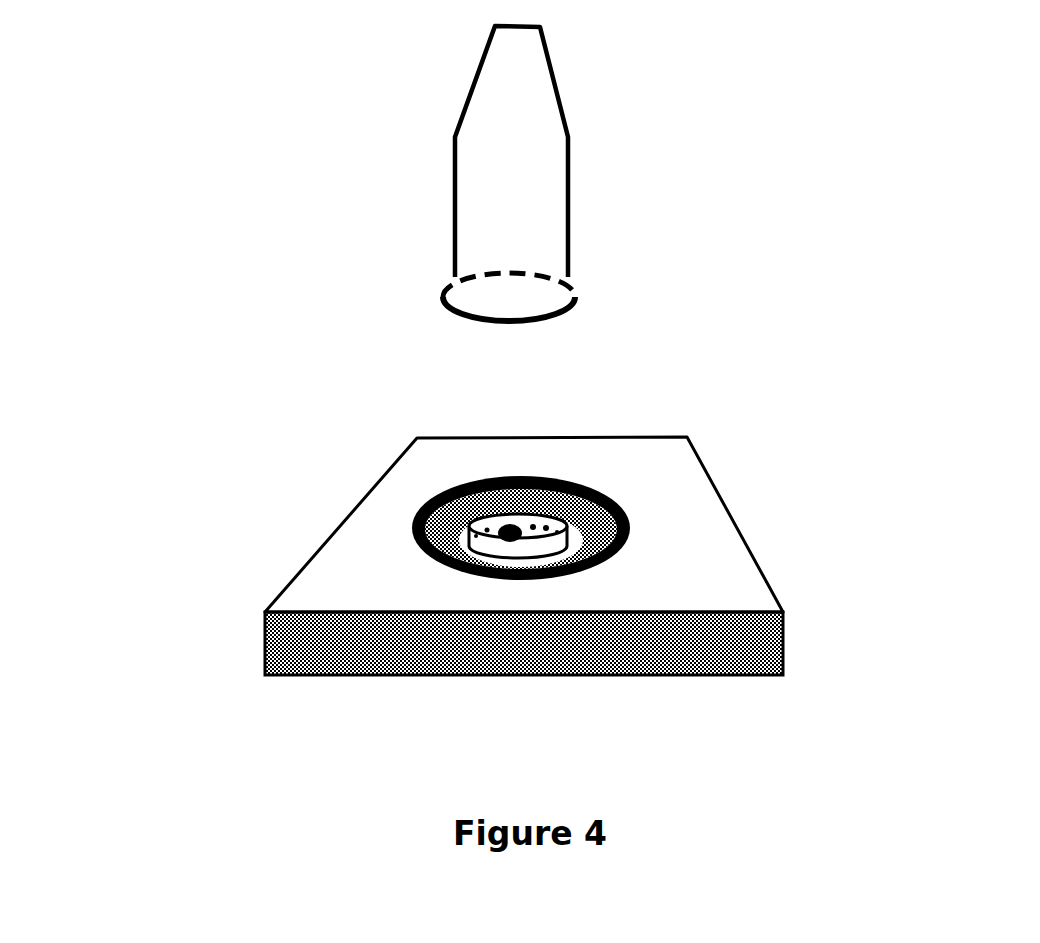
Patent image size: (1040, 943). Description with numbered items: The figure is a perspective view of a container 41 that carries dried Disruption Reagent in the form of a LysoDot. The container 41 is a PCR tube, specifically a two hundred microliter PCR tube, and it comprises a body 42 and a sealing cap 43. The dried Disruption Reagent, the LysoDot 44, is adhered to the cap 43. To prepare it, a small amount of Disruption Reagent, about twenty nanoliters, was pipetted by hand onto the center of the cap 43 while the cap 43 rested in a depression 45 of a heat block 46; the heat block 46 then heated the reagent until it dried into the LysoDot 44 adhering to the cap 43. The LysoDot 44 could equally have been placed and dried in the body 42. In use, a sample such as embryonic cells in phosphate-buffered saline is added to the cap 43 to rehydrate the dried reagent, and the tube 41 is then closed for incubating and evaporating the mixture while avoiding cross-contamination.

The container 41 is at (578, 415).
The body 42 is at (480, 67).
The sealing cap 43 is at (598, 492).
The LysoDot 44 is at (488, 553).
The depression 45 is at (628, 542).
The heat block 46 is at (785, 640).